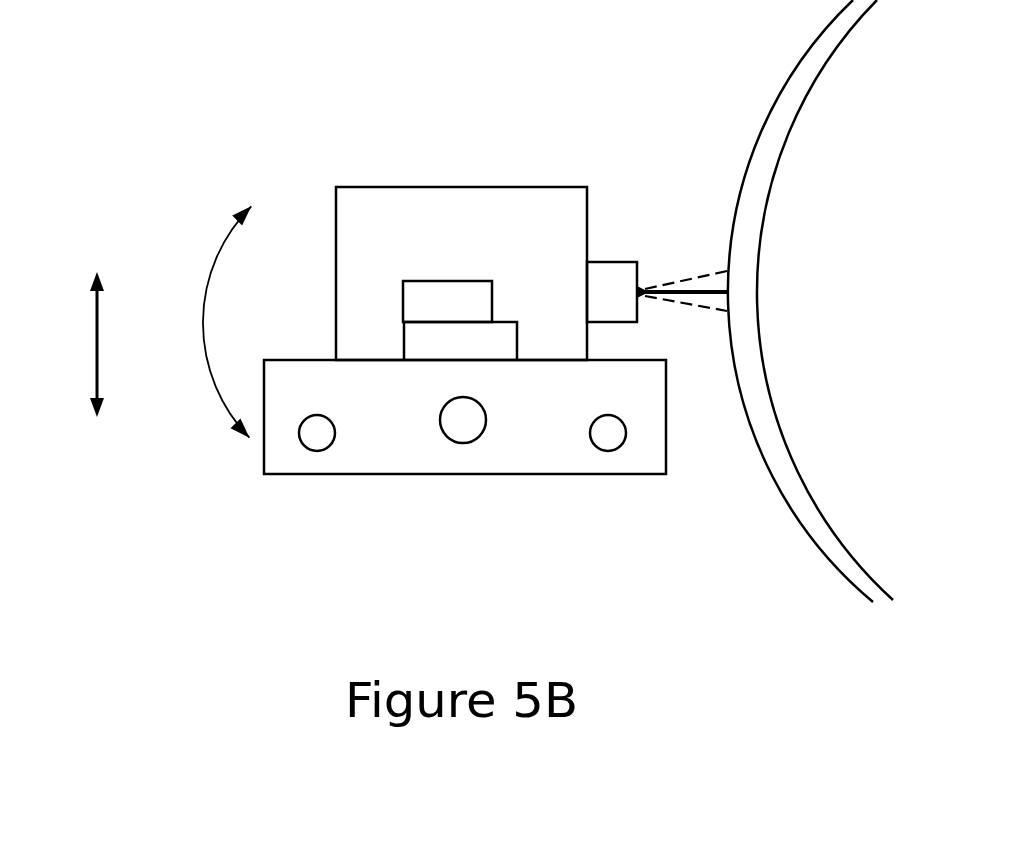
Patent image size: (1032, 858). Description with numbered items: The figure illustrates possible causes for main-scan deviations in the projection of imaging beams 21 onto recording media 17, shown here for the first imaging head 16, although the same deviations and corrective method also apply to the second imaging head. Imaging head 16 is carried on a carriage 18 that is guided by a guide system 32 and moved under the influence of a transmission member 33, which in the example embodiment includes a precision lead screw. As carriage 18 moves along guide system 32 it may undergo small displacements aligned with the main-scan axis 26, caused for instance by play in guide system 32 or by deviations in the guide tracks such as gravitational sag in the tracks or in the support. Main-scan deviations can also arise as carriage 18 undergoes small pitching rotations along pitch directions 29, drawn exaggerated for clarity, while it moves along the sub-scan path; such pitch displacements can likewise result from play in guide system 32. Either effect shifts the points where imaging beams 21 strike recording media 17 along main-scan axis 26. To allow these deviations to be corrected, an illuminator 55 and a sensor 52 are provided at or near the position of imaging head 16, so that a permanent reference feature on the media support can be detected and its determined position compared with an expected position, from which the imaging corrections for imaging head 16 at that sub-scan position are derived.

The first imaging head 16 is at (371, 233).
The illuminator 55 is at (448, 298).
The sensor 52 is at (502, 345).
The carriage 18 is at (306, 392).
The guide system 32 is at (313, 440).
The transmission member 33 is at (460, 433).
The imaging beams 21 is at (687, 290).
The recording media 17 is at (777, 100).
The main-scan axis 26 is at (95, 338).
The pitch directions 29 is at (203, 320).